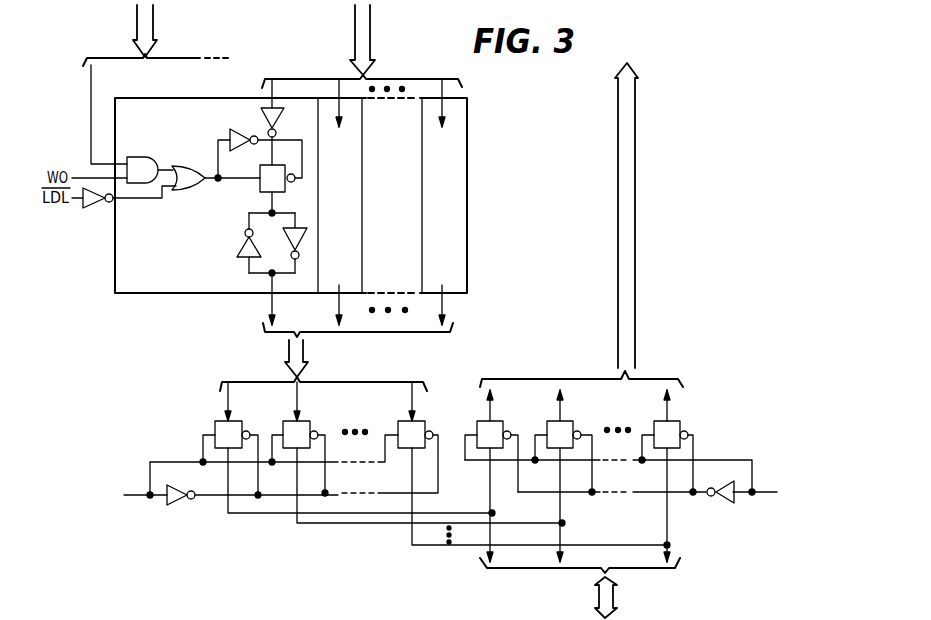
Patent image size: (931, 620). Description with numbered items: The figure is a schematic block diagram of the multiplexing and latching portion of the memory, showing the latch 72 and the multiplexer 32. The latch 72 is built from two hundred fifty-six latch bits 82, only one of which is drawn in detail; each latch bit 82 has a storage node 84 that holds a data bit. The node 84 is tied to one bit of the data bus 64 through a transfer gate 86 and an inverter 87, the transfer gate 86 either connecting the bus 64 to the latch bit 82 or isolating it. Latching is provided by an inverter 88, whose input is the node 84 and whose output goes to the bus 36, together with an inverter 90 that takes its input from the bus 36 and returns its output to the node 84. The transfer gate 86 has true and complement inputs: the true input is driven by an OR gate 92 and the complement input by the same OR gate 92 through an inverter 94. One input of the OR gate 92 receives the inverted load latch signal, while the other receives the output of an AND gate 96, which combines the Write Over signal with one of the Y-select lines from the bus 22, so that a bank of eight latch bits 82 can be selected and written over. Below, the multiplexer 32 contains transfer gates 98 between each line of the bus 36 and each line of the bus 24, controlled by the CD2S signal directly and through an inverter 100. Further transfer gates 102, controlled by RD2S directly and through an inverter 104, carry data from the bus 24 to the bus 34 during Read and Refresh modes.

The bus 22 is at (137, 24).
The data bus 64 is at (353, 25).
The latch 72 is at (483, 128).
The latch bit 82 is at (206, 285).
The storage node 84 is at (268, 206).
The transfer gate 86 is at (283, 191).
The inverter 87 is at (278, 116).
The inverter 88 is at (245, 240).
The inverter 90 is at (293, 243).
The OR gate 92 is at (183, 192).
The inverter 94 is at (229, 133).
The AND gate 96 is at (134, 157).
The bus 34 is at (635, 152).
The bus 36 is at (303, 353).
The multiplexer 32 is at (238, 553).
The transfer gate 98 is at (243, 420).
The inverter 100 is at (177, 505).
The transfer gate 102 is at (552, 418).
The inverter 104 is at (732, 502).
The bus 24 is at (615, 600).